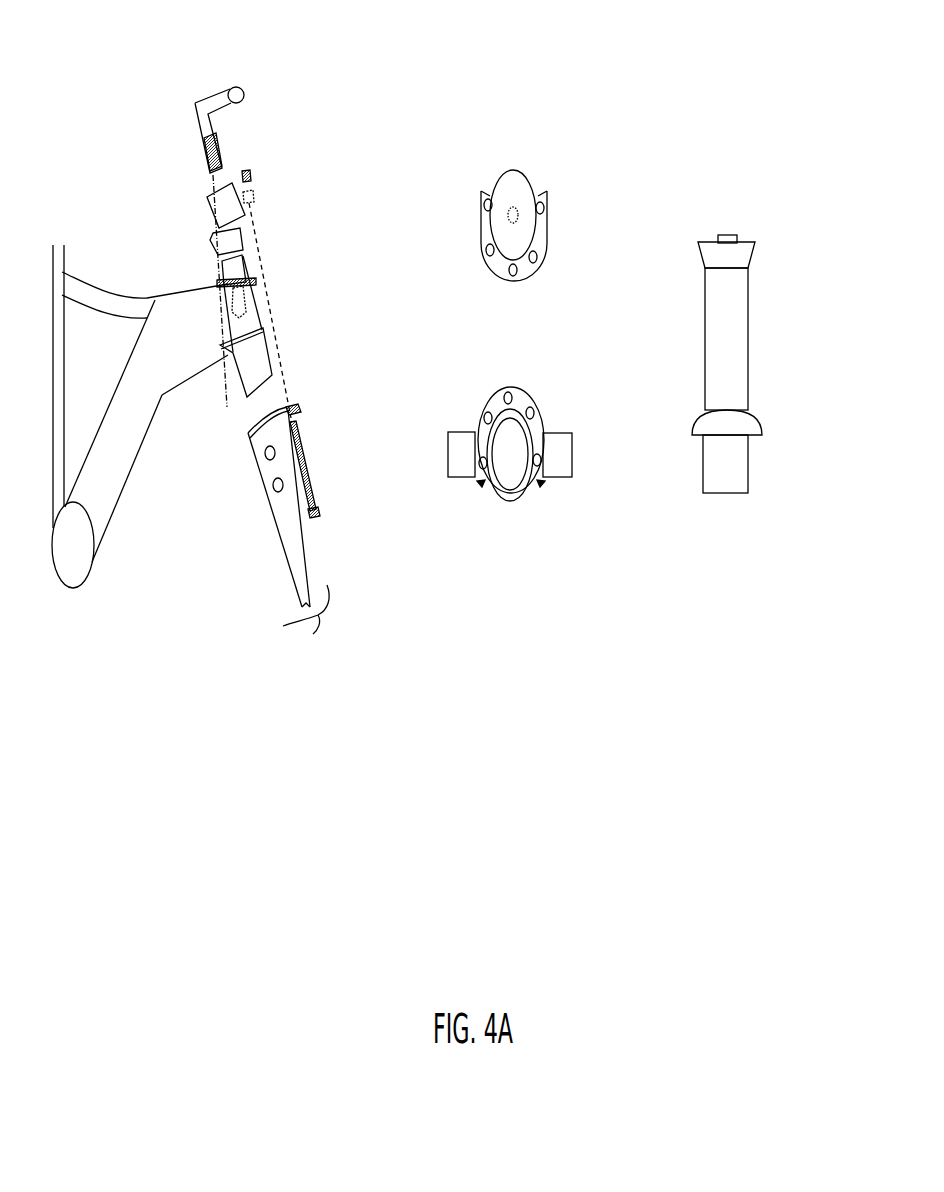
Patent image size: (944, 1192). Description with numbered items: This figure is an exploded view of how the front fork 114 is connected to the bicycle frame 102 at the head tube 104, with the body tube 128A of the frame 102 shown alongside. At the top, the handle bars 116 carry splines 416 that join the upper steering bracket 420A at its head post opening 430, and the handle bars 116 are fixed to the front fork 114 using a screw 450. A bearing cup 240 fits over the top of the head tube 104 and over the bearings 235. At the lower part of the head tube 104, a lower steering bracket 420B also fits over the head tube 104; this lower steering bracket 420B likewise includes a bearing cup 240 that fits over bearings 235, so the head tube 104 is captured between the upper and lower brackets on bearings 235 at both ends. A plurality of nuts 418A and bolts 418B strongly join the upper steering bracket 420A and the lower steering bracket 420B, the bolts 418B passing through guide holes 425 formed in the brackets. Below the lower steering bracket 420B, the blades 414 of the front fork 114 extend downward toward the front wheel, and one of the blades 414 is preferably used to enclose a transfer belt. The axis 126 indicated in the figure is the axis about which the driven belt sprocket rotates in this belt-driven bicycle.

The frame 102 is at (115, 292).
The head tube 104 is at (222, 264).
The front fork 114 is at (311, 620).
The handle bars 116 is at (212, 98).
The axis 126 is at (272, 520).
The body tube 128A is at (126, 488).
The bearings 235 is at (253, 278).
The bearing cup 240 is at (207, 222).
The blades 414 is at (477, 484).
The splines 416 is at (222, 135).
The nuts 418A is at (248, 172).
The bolts 418B is at (314, 516).
The upper steering bracket 420A is at (257, 195).
The lower steering bracket 420B is at (294, 405).
The guide holes 425 is at (543, 238).
The head post opening 430 is at (513, 207).
The screw 450 is at (228, 352).